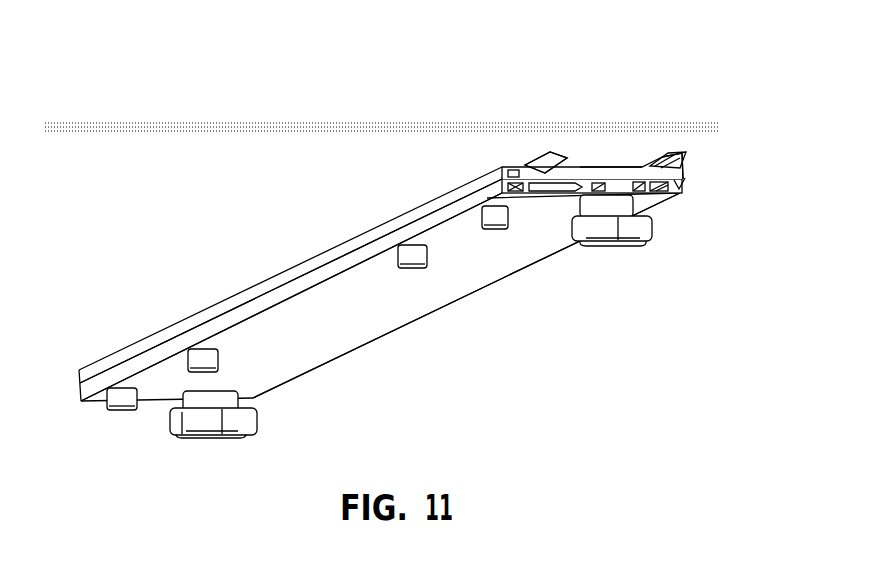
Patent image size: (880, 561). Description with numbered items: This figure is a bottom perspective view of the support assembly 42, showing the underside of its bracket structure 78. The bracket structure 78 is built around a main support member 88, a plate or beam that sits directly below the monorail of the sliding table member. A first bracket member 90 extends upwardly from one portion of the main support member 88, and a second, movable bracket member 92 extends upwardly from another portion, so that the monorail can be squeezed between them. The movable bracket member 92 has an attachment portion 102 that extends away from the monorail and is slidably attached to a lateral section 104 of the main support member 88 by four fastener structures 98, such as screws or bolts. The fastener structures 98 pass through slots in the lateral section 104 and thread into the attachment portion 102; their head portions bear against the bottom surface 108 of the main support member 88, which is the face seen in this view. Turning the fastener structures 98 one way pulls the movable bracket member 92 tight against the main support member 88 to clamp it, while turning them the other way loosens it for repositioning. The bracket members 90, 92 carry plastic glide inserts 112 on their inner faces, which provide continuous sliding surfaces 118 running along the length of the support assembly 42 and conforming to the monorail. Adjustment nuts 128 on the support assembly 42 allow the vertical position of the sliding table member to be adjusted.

The support assembly 42 is at (153, 243).
The bracket structure 78 is at (606, 126).
The main support member 88 is at (477, 277).
The first bracket member 90 is at (690, 155).
The second bracket member 92 is at (537, 160).
The fastener structures 98 is at (190, 374).
The attachment portion 102 is at (416, 206).
The lateral section 104 is at (268, 307).
The bottom surface 108 is at (318, 332).
The glide inserts 112 is at (566, 158).
The sliding surfaces 118 is at (612, 162).
The adjustment nuts 128 is at (195, 439).